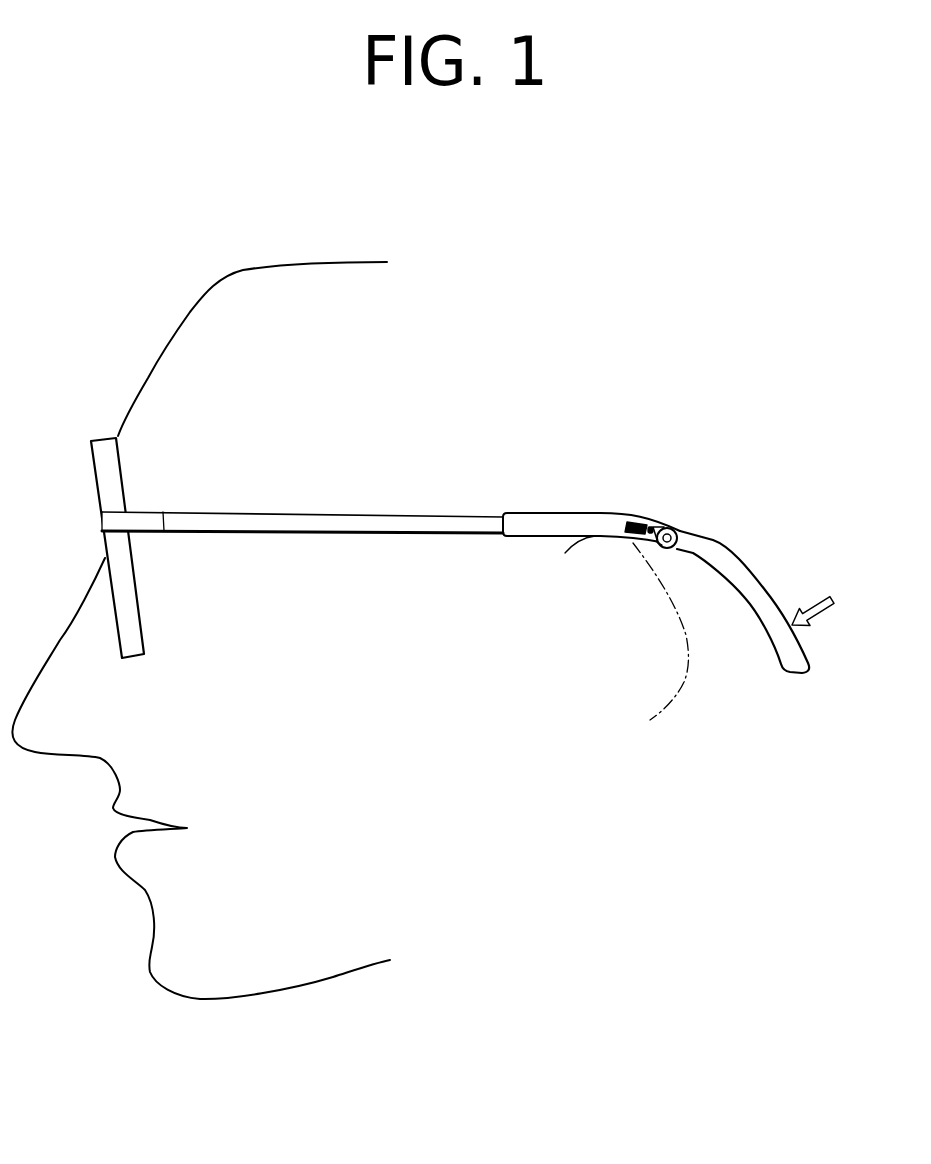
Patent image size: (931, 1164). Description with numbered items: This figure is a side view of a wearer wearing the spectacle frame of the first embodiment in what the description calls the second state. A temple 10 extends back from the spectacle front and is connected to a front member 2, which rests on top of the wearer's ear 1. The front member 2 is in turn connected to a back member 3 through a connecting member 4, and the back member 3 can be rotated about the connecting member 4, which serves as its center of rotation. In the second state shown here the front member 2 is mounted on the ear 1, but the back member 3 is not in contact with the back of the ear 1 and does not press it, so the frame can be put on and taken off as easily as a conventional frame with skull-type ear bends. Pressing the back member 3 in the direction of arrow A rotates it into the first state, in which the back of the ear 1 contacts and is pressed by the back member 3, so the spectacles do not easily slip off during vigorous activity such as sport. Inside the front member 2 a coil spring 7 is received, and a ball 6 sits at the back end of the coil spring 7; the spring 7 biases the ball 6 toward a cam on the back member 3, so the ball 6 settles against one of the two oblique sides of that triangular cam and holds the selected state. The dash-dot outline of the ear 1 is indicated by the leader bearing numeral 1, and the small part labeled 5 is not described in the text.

The ear 1 is at (683, 669).
The front member 2 is at (533, 525).
The back member 3 is at (703, 597).
The connecting member 4 is at (690, 534).
The fastening portion 5 is at (660, 543).
The ball 6 is at (651, 526).
The coil spring 7 is at (637, 525).
The temple 10 is at (336, 522).
The arrow A is at (826, 597).